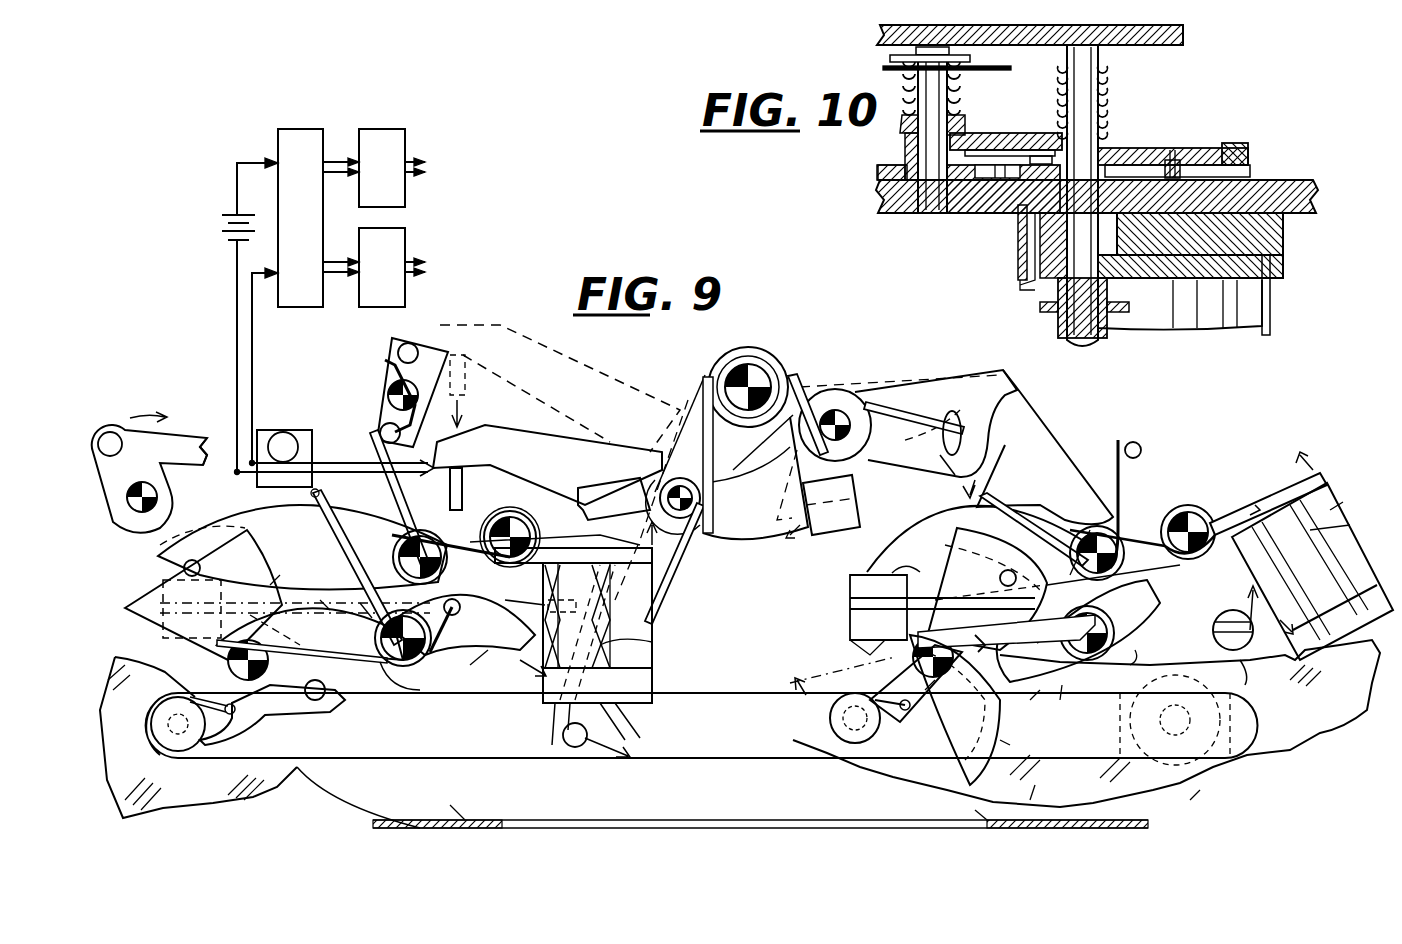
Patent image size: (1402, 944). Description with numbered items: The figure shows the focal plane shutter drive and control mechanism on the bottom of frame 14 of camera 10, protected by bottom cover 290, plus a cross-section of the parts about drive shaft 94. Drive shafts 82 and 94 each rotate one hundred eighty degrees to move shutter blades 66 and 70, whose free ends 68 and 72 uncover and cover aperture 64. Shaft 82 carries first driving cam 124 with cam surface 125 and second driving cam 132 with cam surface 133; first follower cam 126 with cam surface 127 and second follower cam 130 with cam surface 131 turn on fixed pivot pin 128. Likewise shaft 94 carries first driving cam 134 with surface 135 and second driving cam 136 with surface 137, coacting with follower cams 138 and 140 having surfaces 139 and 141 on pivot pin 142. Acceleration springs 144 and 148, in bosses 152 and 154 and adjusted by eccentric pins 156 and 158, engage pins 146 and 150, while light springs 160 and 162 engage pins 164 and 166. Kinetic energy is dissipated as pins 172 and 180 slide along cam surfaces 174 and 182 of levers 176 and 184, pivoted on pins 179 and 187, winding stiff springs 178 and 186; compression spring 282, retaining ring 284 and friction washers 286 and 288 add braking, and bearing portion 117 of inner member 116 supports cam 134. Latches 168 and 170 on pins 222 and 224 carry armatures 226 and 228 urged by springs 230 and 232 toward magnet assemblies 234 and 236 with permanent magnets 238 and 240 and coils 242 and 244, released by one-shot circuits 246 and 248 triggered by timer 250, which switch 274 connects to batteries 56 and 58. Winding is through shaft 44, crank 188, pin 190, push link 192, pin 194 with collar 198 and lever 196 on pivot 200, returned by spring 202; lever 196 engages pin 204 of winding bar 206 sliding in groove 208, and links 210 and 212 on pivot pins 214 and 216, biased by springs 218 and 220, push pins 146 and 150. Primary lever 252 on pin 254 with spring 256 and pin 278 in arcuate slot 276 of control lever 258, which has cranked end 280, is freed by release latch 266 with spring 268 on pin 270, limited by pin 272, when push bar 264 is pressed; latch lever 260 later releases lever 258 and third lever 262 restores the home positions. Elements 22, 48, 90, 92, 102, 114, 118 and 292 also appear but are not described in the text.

In FIG. 9, the camera 10 is at (1041, 655).
In FIG. 10, the frame 14 is at (1316, 195).
In FIG. 9, the frame 14 is at (195, 800).
In FIG. 10, the bracket 22 is at (1018, 240).
In FIG. 9, the shaft 44 is at (125, 520).
In FIG. 9, the plate 48 is at (1148, 822).
In FIG. 9, the battery 56 is at (222, 220).
In FIG. 9, the battery 58 is at (228, 240).
In FIG. 9, the aperture 64 is at (963, 807).
In FIG. 9, the shutter blade 66 is at (325, 800).
In FIG. 9, the free end of blade 68 is at (443, 804).
In FIG. 10, the shutter blade 70 is at (1270, 316).
In FIG. 9, the shutter blade 70 is at (1208, 790).
In FIG. 9, the free end of blade 72 is at (1047, 788).
In FIG. 9, the drive shaft 82 is at (415, 655).
In FIG. 10, the collar 90 is at (1040, 307).
In FIG. 10, the sleeve 92 is at (1058, 328).
In FIG. 10, the drive shaft 94 is at (1100, 55).
In FIG. 9, the drive shaft 94 is at (1082, 620).
In FIG. 9, the plate 102 is at (480, 820).
In FIG. 10, the bar 114 is at (1270, 283).
In FIG. 10, the inner member 116 is at (1132, 280).
In FIG. 10, the bearing portion 117 is at (1020, 284).
In FIG. 10, the block 118 is at (1283, 240).
In FIG. 9, the first driving cam 124 is at (340, 668).
In FIG. 9, the cam surface 125 is at (369, 598).
In FIG. 9, the first follower cam 126 is at (250, 575).
In FIG. 9, the cam surface 127 is at (296, 577).
In FIG. 9, the fixed pivot pin 128 is at (228, 660).
In FIG. 9, the second follower cam 130 is at (315, 637).
In FIG. 9, the cam surface 131 is at (326, 593).
In FIG. 9, the second driving cam 132 is at (518, 632).
In FIG. 9, the cam surface 133 is at (452, 599).
In FIG. 10, the first driving cam 134 is at (1180, 148).
In FIG. 9, the first driving cam 134 is at (1150, 643).
In FIG. 9, the cam surface 135 is at (1126, 661).
In FIG. 10, the second driving cam 136 is at (1040, 156).
In FIG. 9, the second driving cam 136 is at (980, 625).
In FIG. 9, the cam surface 137 is at (1082, 699).
In FIG. 10, the first follower cam 138 is at (1012, 133).
In FIG. 9, the first follower cam 138 is at (967, 595).
In FIG. 9, the cam surface 139 is at (1050, 632).
In FIG. 10, the second follower cam 140 is at (978, 150).
In FIG. 9, the second follower cam 140 is at (993, 743).
In FIG. 9, the cam surface 141 is at (1030, 744).
In FIG. 10, the pivot pin 142 is at (915, 213).
In FIG. 9, the pivot pin 142 is at (950, 696).
In FIG. 9, the acceleration spring 144 is at (492, 660).
In FIG. 9, the pin 146 is at (327, 695).
In FIG. 10, the acceleration spring 148 is at (1250, 170).
In FIG. 9, the acceleration spring 148 is at (852, 607).
In FIG. 10, the pin 150 is at (1172, 150).
In FIG. 9, the pin 150 is at (1125, 545).
In FIG. 9, the boss 152 is at (163, 625).
In FIG. 10, the boss 154 is at (878, 172).
In FIG. 9, the boss 154 is at (870, 650).
In FIG. 9, the eccentrically headed pin 156 is at (509, 675).
In FIG. 9, the eccentrically headed pin 158 is at (1249, 672).
In FIG. 9, the light spring 160 is at (409, 679).
In FIG. 10, the light spring 162 is at (1110, 92).
In FIG. 9, the light spring 162 is at (912, 652).
In FIG. 9, the pin 164 is at (458, 629).
In FIG. 9, the pin 166 is at (1031, 702).
In FIG. 9, the latch 168 is at (526, 591).
In FIG. 10, the latch 170 is at (1248, 145).
In FIG. 9, the latch 170 is at (1228, 650).
In FIG. 9, the pin 172 is at (184, 568).
In FIG. 9, the cam surface 174 is at (318, 550).
In FIG. 9, the lever 176 is at (320, 529).
In FIG. 9, the stiff spring 178 is at (396, 557).
In FIG. 9, the fixed pin 179 is at (418, 540).
In FIG. 10, the pin 180 is at (1000, 213).
In FIG. 9, the pin 180 is at (1000, 575).
In FIG. 10, the cam surface 182 is at (985, 178).
In FIG. 9, the cam surface 182 is at (921, 565).
In FIG. 9, the lever 184 is at (937, 542).
In FIG. 9, the stiff spring 186 is at (1020, 513).
In FIG. 9, the fixed pin 187 is at (1093, 534).
In FIG. 9, the crank 188 is at (158, 490).
In FIG. 9, the pin 190 is at (132, 444).
In FIG. 9, the push link 192 is at (200, 440).
In FIG. 9, the pin 194 is at (639, 506).
In FIG. 9, the lever 196 is at (664, 575).
In FIG. 9, the spring collar 198 is at (670, 488).
In FIG. 9, the fixed pivot 200 is at (760, 365).
In FIG. 9, the spring 202 is at (706, 398).
In FIG. 9, the pin 204 is at (565, 740).
In FIG. 9, the winding bar 206 is at (732, 730).
In FIG. 9, the groove 208 is at (1105, 748).
In FIG. 9, the winding link 210 is at (290, 715).
In FIG. 9, the winding link 212 is at (925, 725).
In FIG. 9, the headed shoulder pivot pin 214 is at (190, 740).
In FIG. 9, the headed shoulder pivot pin 216 is at (835, 735).
In FIG. 9, the spring 218 is at (235, 715).
In FIG. 9, the spring 220 is at (895, 712).
In FIG. 9, the fixed pin 222 is at (515, 508).
In FIG. 9, the fixed pin 224 is at (1212, 520).
In FIG. 9, the soft iron armature 226 is at (595, 548).
In FIG. 9, the soft iron armature 228 is at (1327, 470).
In FIG. 9, the spring 230 is at (565, 545).
In FIG. 9, the spring 232 is at (1260, 505).
In FIG. 9, the magnet assembly 234 is at (652, 680).
In FIG. 9, the magnet assembly 236 is at (1365, 629).
In FIG. 9, the permanent magnet portion 238 is at (640, 620).
In FIG. 9, the permanent magnet portion 240 is at (1356, 500).
In FIG. 9, the electric coil 242 is at (651, 641).
In FIG. 9, the electric coil 244 is at (1351, 521).
In FIG. 9, the one-shot pulse circuit 246 is at (402, 176).
In FIG. 9, the one-shot pulse circuit 248 is at (402, 276).
In FIG. 9, the exposure timer 250 is at (322, 229).
In FIG. 9, the primary mirror and diaphragm actuating lever 252 is at (505, 460).
In FIG. 9, the fixed pin 254 is at (832, 408).
In FIG. 9, the spring 256 is at (912, 395).
In FIG. 9, the control lever 258 is at (918, 450).
In FIG. 9, the latch lever 260 is at (1015, 388).
In FIG. 9, the third lever 262 is at (463, 480).
In FIG. 9, the push bar 264 is at (408, 343).
In FIG. 9, the first release latch 266 is at (432, 338).
In FIG. 9, the biasing spring 268 is at (385, 362).
In FIG. 9, the fixed pin 270 is at (388, 392).
In FIG. 9, the fixed pin 272 is at (386, 425).
In FIG. 9, the switch 274 is at (322, 440).
In FIG. 9, the arcuate slot 276 is at (967, 457).
In FIG. 9, the pin 278 is at (952, 411).
In FIG. 9, the cranked end 280 is at (860, 505).
In FIG. 10, the helical compression spring 282 is at (903, 95).
In FIG. 10, the retaining ring 284 is at (890, 58).
In FIG. 10, the friction washer 286 is at (900, 122).
In FIG. 10, the friction washer 288 is at (905, 160).
In FIG. 10, the camera bottom cover 290 is at (1180, 32).
In FIG. 9, the pin 292 is at (1141, 450).